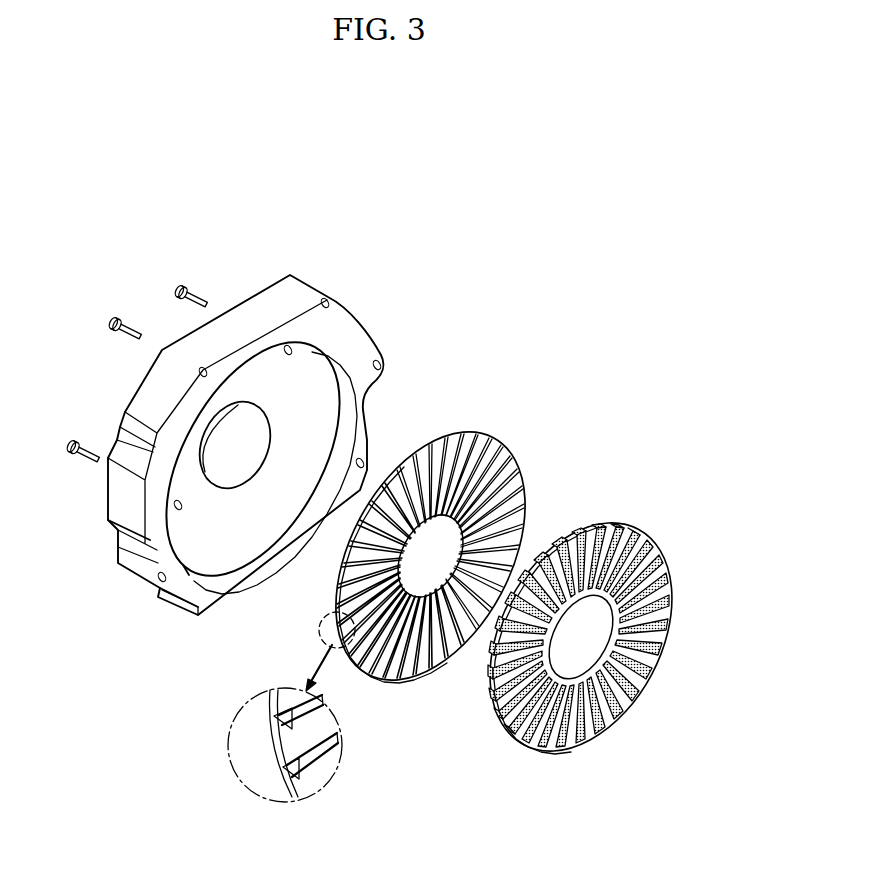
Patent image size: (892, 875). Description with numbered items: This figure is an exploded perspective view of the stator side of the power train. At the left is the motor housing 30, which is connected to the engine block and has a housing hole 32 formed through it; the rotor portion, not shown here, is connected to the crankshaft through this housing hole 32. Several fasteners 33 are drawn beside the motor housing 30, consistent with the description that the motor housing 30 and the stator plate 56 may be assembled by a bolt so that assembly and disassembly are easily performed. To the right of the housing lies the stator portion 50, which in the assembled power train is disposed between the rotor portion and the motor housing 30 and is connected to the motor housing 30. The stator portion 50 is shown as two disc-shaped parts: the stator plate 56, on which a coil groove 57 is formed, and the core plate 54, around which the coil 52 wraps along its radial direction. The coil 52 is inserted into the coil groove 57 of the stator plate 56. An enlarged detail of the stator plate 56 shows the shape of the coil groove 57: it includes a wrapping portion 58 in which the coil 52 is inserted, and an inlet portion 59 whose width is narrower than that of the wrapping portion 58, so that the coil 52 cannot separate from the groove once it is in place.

The motor housing 30 is at (244, 481).
The housing hole 32 is at (233, 448).
The fastening screws 33 is at (135, 332).
The stator portion 50 is at (424, 617).
The coil 52 is at (581, 636).
The core plate 54 is at (578, 666).
The stator plate 56 is at (351, 617).
The coil groove 57 is at (238, 758).
The wrapping portion 58 is at (290, 730).
The inlet portion 59 is at (292, 748).